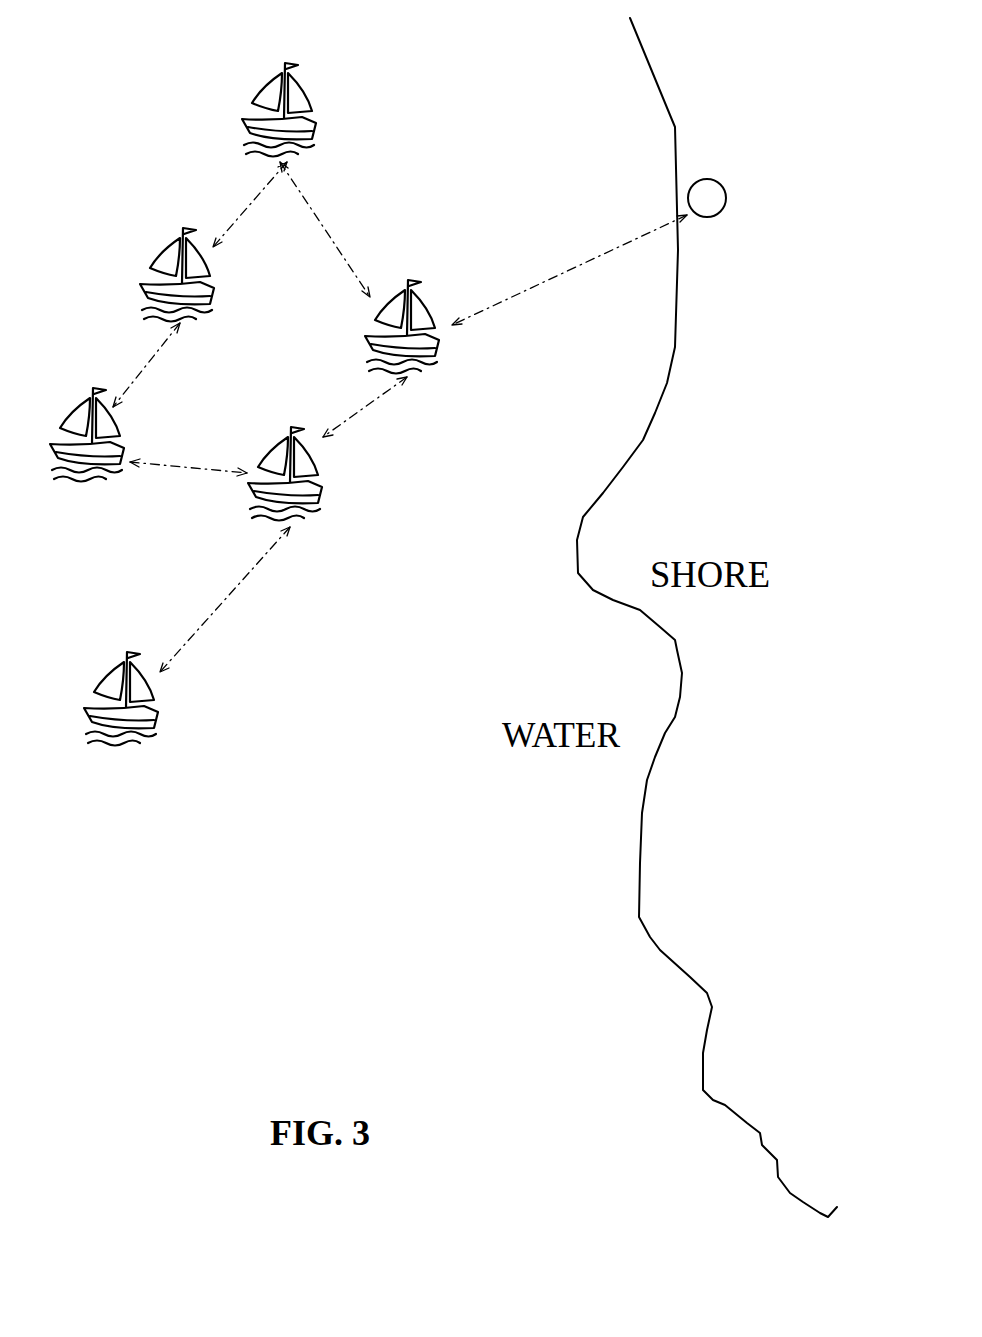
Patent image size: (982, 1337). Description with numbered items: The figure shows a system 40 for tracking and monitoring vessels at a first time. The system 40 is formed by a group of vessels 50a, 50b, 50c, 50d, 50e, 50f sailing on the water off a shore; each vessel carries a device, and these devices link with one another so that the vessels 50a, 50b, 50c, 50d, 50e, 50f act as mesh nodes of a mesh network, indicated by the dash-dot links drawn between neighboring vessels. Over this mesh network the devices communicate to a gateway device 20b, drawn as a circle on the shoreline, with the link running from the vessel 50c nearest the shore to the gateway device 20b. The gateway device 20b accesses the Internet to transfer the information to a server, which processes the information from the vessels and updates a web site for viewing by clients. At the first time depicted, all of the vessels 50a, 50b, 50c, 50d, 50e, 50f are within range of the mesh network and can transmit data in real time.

The system 40 is at (135, 162).
The gateway device 20b is at (722, 190).
The vessel 50a is at (297, 113).
The vessel 50b is at (189, 290).
The vessel 50c is at (420, 336).
The vessel 50d is at (93, 450).
The vessel 50e is at (298, 485).
The vessel 50f is at (126, 714).